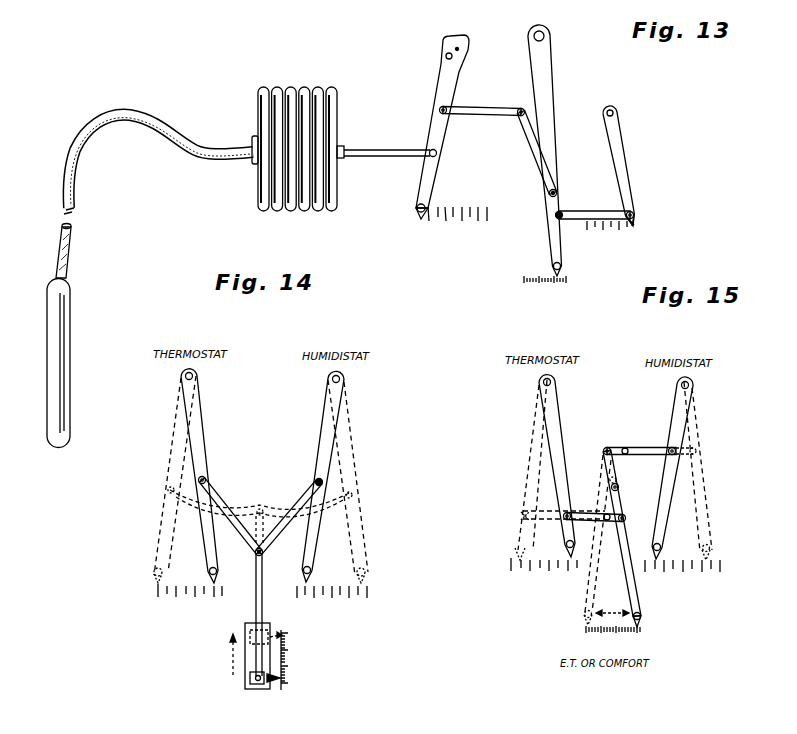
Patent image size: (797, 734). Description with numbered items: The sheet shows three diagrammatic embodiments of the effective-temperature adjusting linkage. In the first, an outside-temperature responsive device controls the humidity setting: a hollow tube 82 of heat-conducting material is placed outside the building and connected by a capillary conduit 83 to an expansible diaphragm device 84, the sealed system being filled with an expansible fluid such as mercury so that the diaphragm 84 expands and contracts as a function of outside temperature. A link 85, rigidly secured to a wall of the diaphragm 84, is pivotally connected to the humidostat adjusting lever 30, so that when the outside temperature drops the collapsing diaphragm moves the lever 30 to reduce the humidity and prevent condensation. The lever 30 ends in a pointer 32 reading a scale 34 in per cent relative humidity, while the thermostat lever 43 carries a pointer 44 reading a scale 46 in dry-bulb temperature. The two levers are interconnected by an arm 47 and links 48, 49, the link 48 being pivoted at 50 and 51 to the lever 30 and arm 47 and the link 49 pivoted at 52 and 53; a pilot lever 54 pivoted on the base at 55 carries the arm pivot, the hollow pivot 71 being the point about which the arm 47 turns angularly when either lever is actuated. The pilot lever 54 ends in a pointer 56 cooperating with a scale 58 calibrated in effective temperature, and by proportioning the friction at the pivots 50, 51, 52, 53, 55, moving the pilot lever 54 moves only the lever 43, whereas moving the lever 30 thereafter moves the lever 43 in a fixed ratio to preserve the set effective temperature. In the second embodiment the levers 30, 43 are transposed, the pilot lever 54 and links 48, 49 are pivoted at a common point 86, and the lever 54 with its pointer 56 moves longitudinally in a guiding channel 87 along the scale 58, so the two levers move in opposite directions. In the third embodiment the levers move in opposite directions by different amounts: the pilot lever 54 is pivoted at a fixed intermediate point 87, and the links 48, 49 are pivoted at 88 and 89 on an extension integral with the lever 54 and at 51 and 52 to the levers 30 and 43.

In FIG. 13, the adjusting lever 30 is at (455, 78).
In FIG. 14, the adjusting lever 30 is at (323, 441).
In FIG. 15, the adjusting lever 30 is at (672, 428).
In FIG. 13, the pointer 32 is at (416, 208).
In FIG. 14, the pointer 32 is at (312, 573).
In FIG. 15, the pointer 32 is at (657, 547).
In FIG. 13, the scale 34 is at (489, 211).
In FIG. 14, the scale 34 is at (372, 592).
In FIG. 15, the scale 34 is at (684, 571).
In FIG. 13, the lever 43 is at (620, 157).
In FIG. 14, the lever 43 is at (204, 431).
In FIG. 15, the lever 43 is at (559, 441).
In FIG. 13, the pointer 44 is at (637, 222).
In FIG. 14, the pointer 44 is at (218, 573).
In FIG. 15, the pointer 44 is at (570, 544).
In FIG. 13, the scale 46 is at (586, 222).
In FIG. 14, the scale 46 is at (150, 588).
In FIG. 15, the scale 46 is at (544, 568).
In FIG. 13, the arm 47 is at (535, 153).
In FIG. 13, the link 48 is at (472, 118).
In FIG. 14, the link 48 is at (313, 494).
In FIG. 15, the link 48 is at (643, 447).
In FIG. 13, the link 49 is at (593, 211).
In FIG. 14, the link 49 is at (224, 493).
In FIG. 15, the link 49 is at (590, 512).
In FIG. 13, the pivot 50 is at (440, 108).
In FIG. 13, the pivot 51 is at (521, 108).
In FIG. 14, the pivot 51 is at (316, 480).
In FIG. 15, the pivot 51 is at (674, 458).
In FIG. 13, the pivot 52 is at (556, 218).
In FIG. 14, the pivot 52 is at (206, 479).
In FIG. 15, the pivot 52 is at (565, 512).
In FIG. 13, the pivot 53 is at (634, 212).
In FIG. 13, the pilot lever 54 is at (555, 150).
In FIG. 14, the pilot lever 54 is at (262, 596).
In FIG. 15, the pilot lever 54 is at (628, 566).
In FIG. 13, the pivot 55 is at (545, 37).
In FIG. 13, the pointer 56 is at (552, 268).
In FIG. 14, the pointer 56 is at (262, 690).
In FIG. 15, the pointer 56 is at (612, 619).
In FIG. 13, the scale 58 is at (522, 280).
In FIG. 14, the scale 58 is at (284, 689).
In FIG. 15, the scale 58 is at (612, 636).
In FIG. 13, the hollow pivot 71 is at (558, 190).
In FIG. 13, the hollow tube 82 is at (52, 367).
In FIG. 13, the capillary conduit 83 is at (78, 143).
In FIG. 13, the expansible diaphragm device 84 is at (258, 95).
In FIG. 13, the link 85 is at (368, 148).
In FIG. 14, the common point 86 is at (256, 552).
In FIG. 14, the channel 87 is at (254, 623).
In FIG. 15, the channel 87 is at (620, 488).
In FIG. 15, the pivot 88 is at (608, 447).
In FIG. 15, the pivot 89 is at (627, 517).